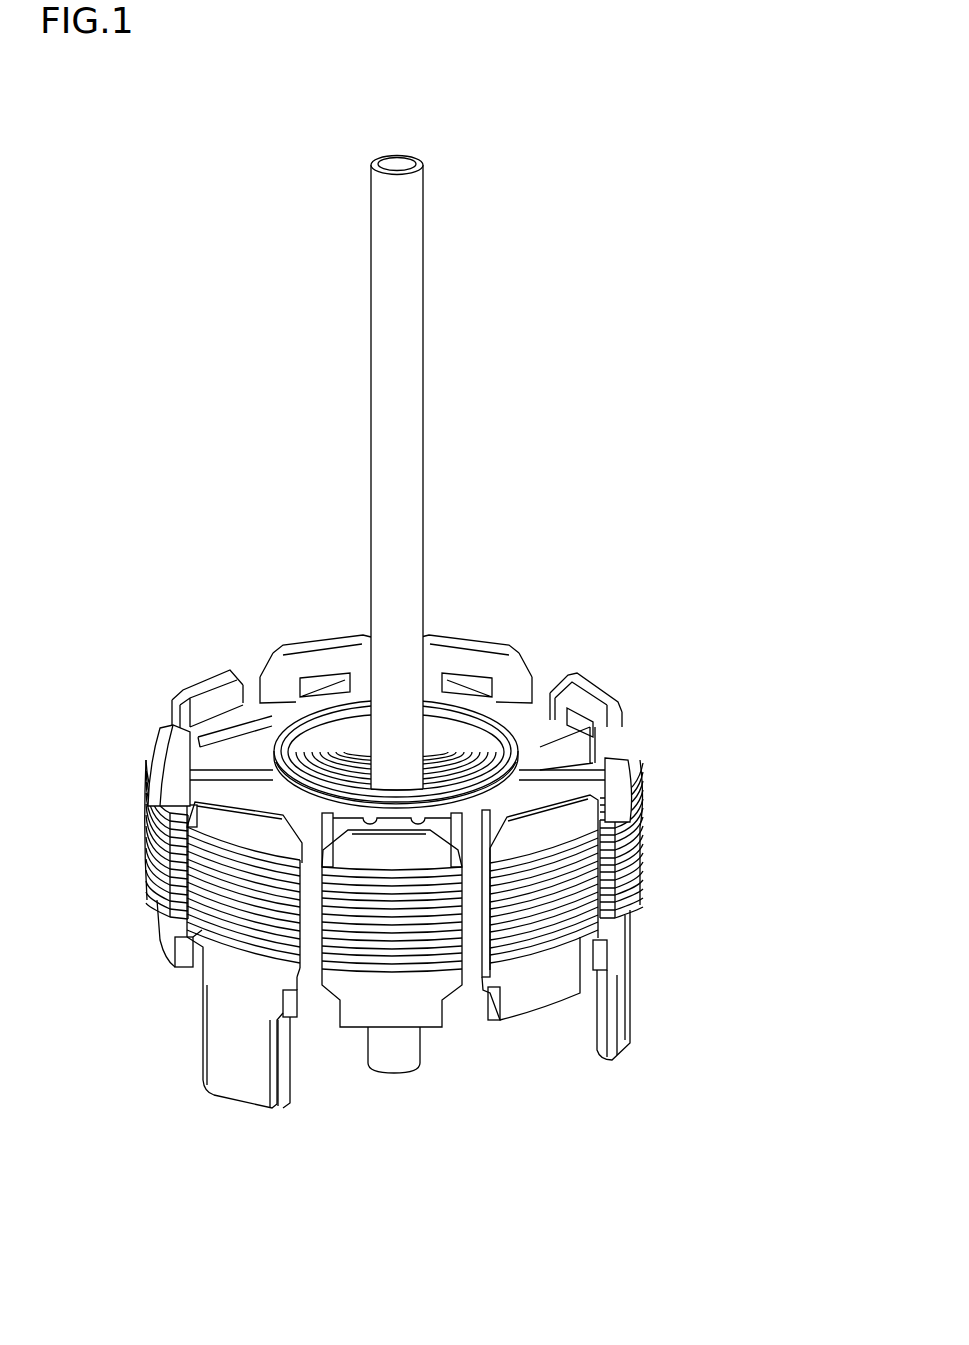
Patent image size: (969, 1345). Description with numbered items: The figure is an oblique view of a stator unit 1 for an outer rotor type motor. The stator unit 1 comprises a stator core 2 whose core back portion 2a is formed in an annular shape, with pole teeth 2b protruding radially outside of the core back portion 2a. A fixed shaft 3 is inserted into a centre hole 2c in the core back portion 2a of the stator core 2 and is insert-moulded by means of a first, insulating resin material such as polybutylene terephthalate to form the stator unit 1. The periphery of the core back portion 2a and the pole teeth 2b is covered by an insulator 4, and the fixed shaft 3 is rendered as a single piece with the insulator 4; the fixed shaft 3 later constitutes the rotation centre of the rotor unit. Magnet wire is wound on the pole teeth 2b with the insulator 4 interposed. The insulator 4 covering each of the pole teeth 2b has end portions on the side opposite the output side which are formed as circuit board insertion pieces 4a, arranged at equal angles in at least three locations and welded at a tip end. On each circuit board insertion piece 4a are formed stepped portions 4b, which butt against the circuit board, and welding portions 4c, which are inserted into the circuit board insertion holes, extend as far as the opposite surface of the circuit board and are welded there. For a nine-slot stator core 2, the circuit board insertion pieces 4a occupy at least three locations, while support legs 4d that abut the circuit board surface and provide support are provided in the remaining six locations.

The stator unit 1 is at (230, 418).
The stator core 2 is at (340, 735).
The core back portion 2a is at (443, 742).
The pole teeth 2b is at (143, 820).
The centre hole 2c is at (313, 713).
The fixed shaft 3 is at (426, 187).
The insulator 4 is at (592, 682).
The circuit board insertion pieces 4a is at (320, 1173).
The stepped portions 4b is at (283, 1108).
The welding portions 4c is at (245, 1108).
The support legs 4d is at (440, 1033).